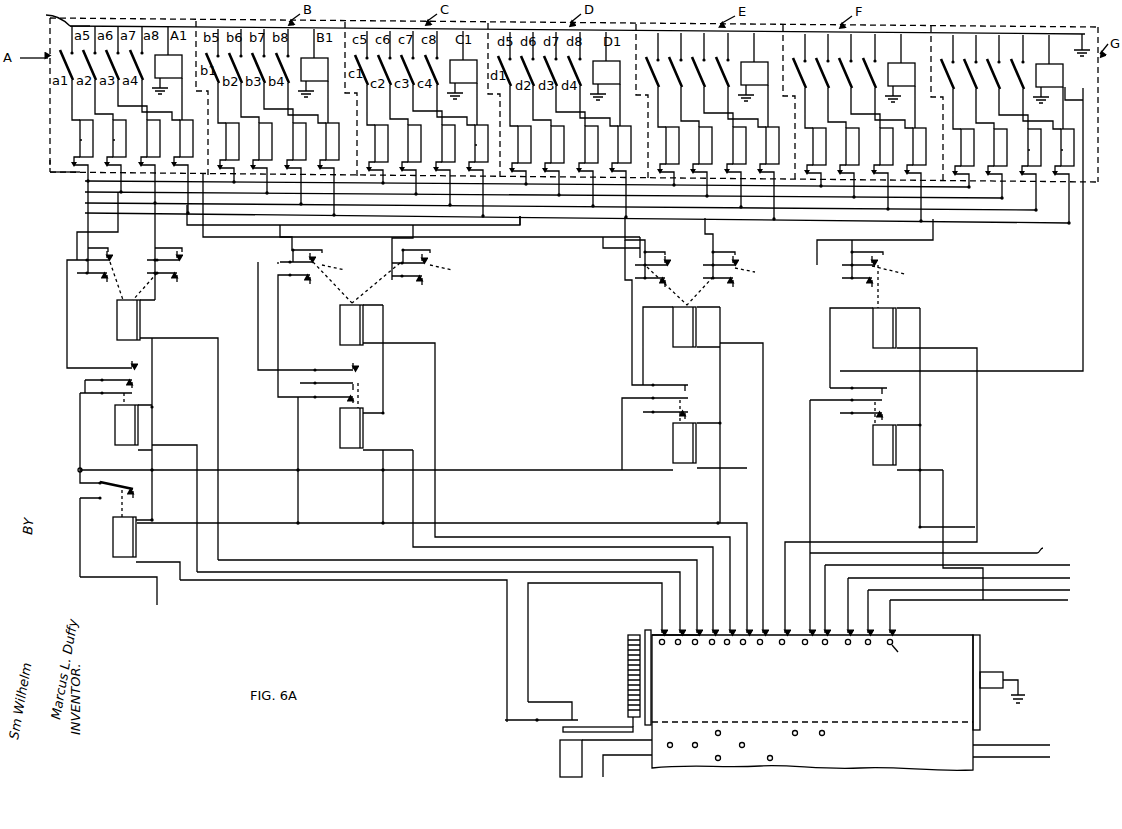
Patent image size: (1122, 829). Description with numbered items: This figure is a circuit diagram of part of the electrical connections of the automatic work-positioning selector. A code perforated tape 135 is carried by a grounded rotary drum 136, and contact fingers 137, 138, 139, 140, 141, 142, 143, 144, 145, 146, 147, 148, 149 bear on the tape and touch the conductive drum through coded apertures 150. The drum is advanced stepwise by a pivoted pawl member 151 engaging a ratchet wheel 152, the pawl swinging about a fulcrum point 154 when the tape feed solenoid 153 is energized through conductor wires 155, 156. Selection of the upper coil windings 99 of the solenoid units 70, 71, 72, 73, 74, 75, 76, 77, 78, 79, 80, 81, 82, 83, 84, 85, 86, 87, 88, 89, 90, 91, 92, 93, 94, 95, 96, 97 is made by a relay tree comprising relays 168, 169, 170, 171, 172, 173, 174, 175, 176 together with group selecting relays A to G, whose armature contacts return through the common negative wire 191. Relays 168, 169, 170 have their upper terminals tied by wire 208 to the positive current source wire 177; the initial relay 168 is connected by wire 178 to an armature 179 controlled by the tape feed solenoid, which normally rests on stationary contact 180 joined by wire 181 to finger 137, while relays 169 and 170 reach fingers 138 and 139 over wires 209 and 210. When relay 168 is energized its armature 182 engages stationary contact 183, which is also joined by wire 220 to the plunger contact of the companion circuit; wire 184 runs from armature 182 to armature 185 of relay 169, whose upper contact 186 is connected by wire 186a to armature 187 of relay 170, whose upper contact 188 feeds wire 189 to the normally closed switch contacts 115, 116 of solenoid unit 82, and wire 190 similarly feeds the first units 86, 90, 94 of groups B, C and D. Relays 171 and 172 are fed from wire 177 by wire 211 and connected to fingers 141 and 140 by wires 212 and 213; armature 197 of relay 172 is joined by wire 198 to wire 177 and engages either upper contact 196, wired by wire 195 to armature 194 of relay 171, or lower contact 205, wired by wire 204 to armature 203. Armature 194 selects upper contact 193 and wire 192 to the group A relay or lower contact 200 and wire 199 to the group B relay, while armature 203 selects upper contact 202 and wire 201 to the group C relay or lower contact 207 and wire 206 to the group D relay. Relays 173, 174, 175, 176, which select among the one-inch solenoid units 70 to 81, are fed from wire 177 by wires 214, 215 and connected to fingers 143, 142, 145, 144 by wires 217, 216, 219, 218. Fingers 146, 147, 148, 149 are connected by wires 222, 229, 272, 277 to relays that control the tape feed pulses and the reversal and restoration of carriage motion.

The negative current source wire 191 is at (46, 12).
The solenoid unit 70 is at (672, 125).
The solenoid unit 71 is at (704, 125).
The solenoid unit 72 is at (736, 125).
The solenoid unit 73 is at (773, 125).
The solenoid unit 74 is at (819, 126).
The solenoid unit 75 is at (851, 126).
The solenoid unit 76 is at (883, 126).
The solenoid unit 77 is at (920, 126).
The solenoid unit 78 is at (967, 127).
The solenoid unit 79 is at (998, 127).
The solenoid unit 80 is at (1032, 127).
The solenoid unit 81 is at (1068, 127).
The solenoid unit 82 is at (86, 118).
The solenoid unit 83 is at (118, 118).
The solenoid unit 84 is at (150, 118).
The solenoid unit 85 is at (187, 118).
The solenoid unit 86 is at (232, 121).
The solenoid unit 87 is at (264, 121).
The solenoid unit 88 is at (296, 121).
The solenoid unit 89 is at (333, 121).
The solenoid unit 90 is at (381, 123).
The solenoid unit 91 is at (413, 123).
The solenoid unit 92 is at (445, 123).
The solenoid unit 93 is at (482, 123).
The solenoid unit 94 is at (524, 124).
The solenoid unit 95 is at (556, 124).
The solenoid unit 96 is at (588, 124).
The solenoid unit 97 is at (625, 124).
The upper coil winding 99 is at (80, 146).
The switch contact 115 is at (76, 173).
The switch contact 116 is at (50, 160).
The code perforated tape 135 is at (943, 633).
The rotary drum 136 is at (983, 650).
The contact finger 137 is at (660, 630).
The contact finger 138 is at (667, 651).
The contact finger 139 is at (687, 650).
The contact finger 140 is at (706, 651).
The contact finger 141 is at (716, 650).
The contact finger 142 is at (740, 651).
The contact finger 143 is at (761, 650).
The contact finger 144 is at (774, 651).
The contact finger 145 is at (798, 650).
The contact finger 146 is at (817, 651).
The contact finger 147 is at (840, 650).
The contact finger 148 is at (859, 651).
The contact finger 149 is at (892, 628).
The aperture 150 is at (896, 650).
The pivoted pawl member 151 is at (608, 726).
The ratchet wheel 152 is at (624, 661).
The tape feed solenoid 153 is at (559, 762).
The fulcrum point 154 is at (600, 726).
The conductor wire 155 is at (1026, 744).
The conductor wire 156 is at (1025, 758).
The initial relay 168 is at (136, 545).
The relay 169 is at (115, 434).
The relay 170 is at (117, 320).
The relay 171 is at (340, 332).
The relay 172 is at (340, 436).
The relay 173 is at (673, 340).
The relay 174 is at (673, 458).
The relay 175 is at (873, 326).
The relay 176 is at (868, 460).
The positive current source wire 177 is at (240, 530).
The wire 178 is at (238, 581).
The armature 179 is at (556, 720).
The stationary contact 180 is at (566, 706).
The wire 181 is at (530, 633).
The armature 182 is at (134, 486).
The stationary contact 183 is at (100, 500).
The wire 184 is at (80, 430).
The armature 185 is at (124, 379).
The upper contact 186 is at (108, 372).
The wire 186a is at (67, 330).
The armature 187 is at (112, 262).
The upper contact 188 is at (110, 248).
The wire 189 is at (88, 222).
The wire 190 is at (100, 196).
The wire 192 is at (218, 238).
The upper contact 193 is at (300, 250).
The armature 194 is at (325, 262).
The wire 195 is at (258, 324).
The upper contact 196 is at (326, 363).
The armature 197 is at (358, 380).
The wire 198 is at (298, 438).
The wire 199 is at (350, 226).
The lower contact 200 is at (296, 278).
The wire 201 is at (496, 226).
The upper contact 202 is at (432, 250).
The armature 203 is at (440, 268).
The wire 204 is at (279, 311).
The lower contact 205 is at (332, 414).
The wire 206 is at (562, 252).
The lower contact 207 is at (422, 280).
The wire 208 is at (153, 386).
The wire 209 is at (172, 445).
The wire 210 is at (218, 356).
The wire 211 is at (385, 386).
The wire 212 is at (436, 410).
The wire 213 is at (412, 548).
The wire 214 is at (725, 384).
The wire 215 is at (920, 400).
The wire 216 is at (738, 466).
The wire 217 is at (742, 342).
The wire 218 is at (944, 463).
The wire 219 is at (980, 424).
The wire 220 is at (158, 608).
The wire 222 is at (939, 552).
The wire 229 is at (961, 599).
The wire 272 is at (973, 605).
The wire 277 is at (1055, 601).